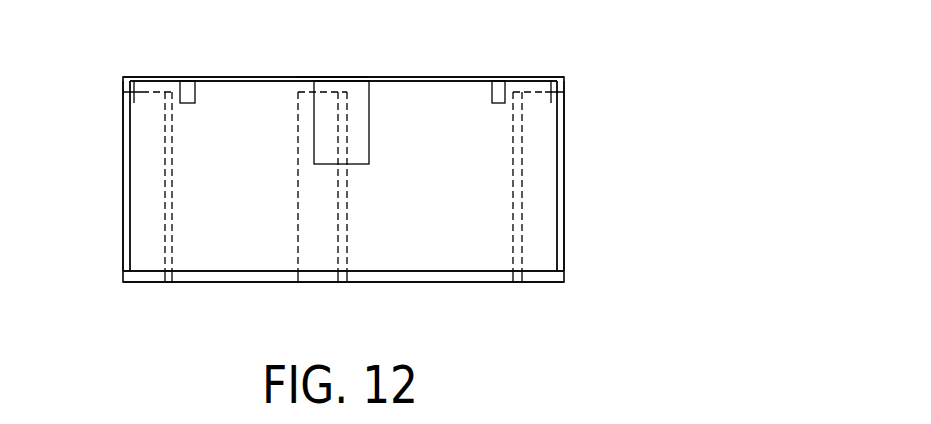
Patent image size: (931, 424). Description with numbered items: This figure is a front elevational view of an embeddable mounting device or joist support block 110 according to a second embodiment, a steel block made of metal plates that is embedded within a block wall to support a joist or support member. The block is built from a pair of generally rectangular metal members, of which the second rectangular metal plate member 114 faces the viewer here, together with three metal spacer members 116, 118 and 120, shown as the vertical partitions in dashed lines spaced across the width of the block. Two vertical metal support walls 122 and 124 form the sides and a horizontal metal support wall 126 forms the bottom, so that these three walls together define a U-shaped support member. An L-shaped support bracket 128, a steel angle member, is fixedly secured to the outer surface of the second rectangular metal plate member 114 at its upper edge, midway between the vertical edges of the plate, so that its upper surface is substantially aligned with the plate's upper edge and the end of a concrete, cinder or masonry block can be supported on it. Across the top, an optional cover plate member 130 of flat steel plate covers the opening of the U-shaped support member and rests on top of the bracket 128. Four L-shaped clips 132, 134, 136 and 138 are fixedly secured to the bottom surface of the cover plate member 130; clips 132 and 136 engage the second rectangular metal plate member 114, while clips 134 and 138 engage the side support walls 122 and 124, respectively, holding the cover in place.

The embeddable mounting device or joist support block 110 is at (92, 87).
The second rectangular metal plate member 114 is at (239, 105).
The metal spacer member 116 is at (151, 255).
The metal spacer member 118 is at (322, 247).
The metal spacer member 120 is at (540, 264).
The vertical metal support wall 122 is at (123, 188).
The vertical metal support wall 124 is at (558, 187).
The horizontal metal support wall 126 is at (237, 278).
The L-shaped support bracket 128 is at (362, 120).
The cover plate member 130 is at (296, 79).
The clip 132 is at (192, 79).
The clip 134 is at (145, 78).
The clip 136 is at (502, 80).
The clip 138 is at (548, 80).